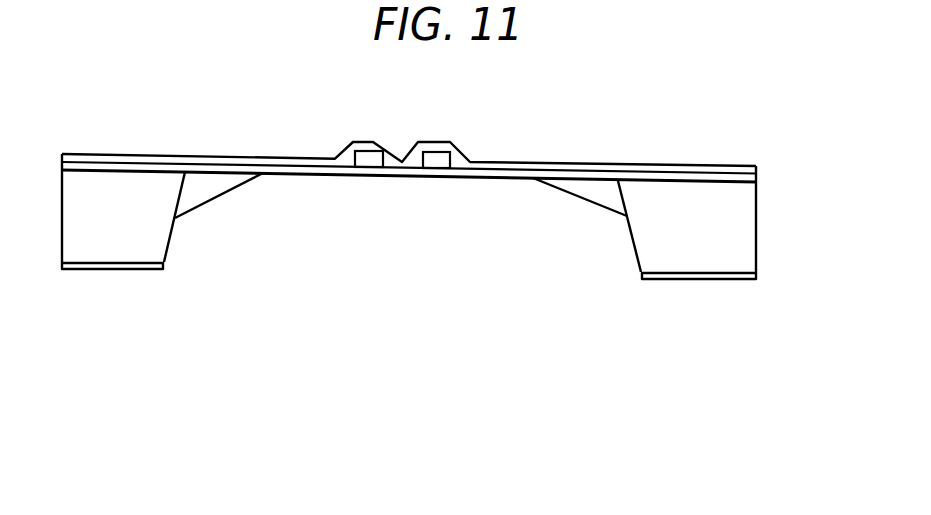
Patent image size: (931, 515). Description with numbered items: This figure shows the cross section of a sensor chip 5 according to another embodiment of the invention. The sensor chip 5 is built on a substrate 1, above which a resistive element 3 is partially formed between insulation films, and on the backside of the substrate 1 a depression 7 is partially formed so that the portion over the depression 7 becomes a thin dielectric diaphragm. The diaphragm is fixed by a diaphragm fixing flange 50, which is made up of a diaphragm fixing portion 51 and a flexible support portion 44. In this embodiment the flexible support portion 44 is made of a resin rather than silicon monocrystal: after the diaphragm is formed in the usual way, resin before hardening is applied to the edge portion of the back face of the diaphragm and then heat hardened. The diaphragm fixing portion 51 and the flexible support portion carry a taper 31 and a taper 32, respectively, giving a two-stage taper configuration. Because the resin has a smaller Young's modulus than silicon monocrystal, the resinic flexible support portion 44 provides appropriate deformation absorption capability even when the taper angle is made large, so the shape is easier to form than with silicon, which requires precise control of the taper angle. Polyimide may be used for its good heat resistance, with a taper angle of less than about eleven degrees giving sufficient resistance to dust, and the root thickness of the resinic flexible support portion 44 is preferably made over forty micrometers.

The substrate 1 is at (733, 238).
The resistive element 3 is at (373, 157).
The sensor chip 5 is at (765, 182).
The depression 7 is at (417, 187).
The taper 31 is at (168, 250).
The taper 32 is at (245, 183).
The flexible support portion 44 is at (205, 190).
The diaphragm fixing flange 50 is at (148, 277).
The diaphragm fixing portion 51 is at (98, 252).